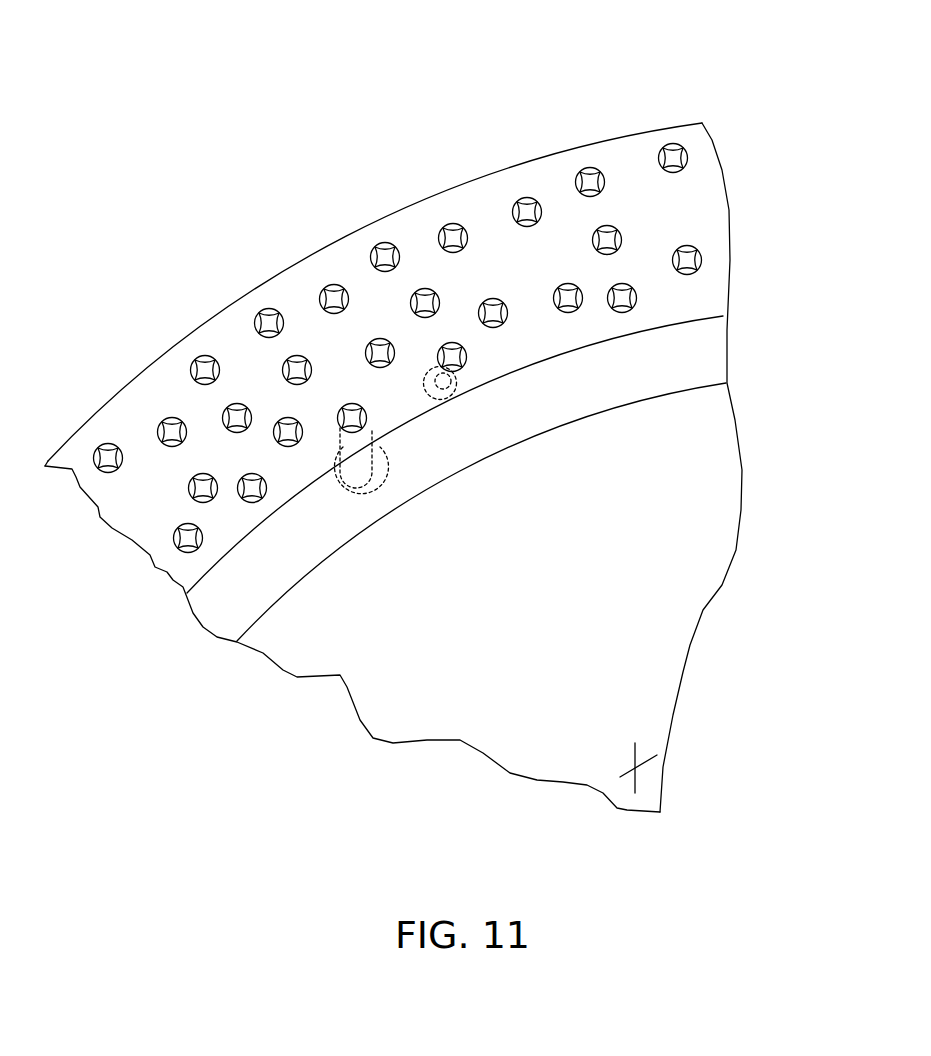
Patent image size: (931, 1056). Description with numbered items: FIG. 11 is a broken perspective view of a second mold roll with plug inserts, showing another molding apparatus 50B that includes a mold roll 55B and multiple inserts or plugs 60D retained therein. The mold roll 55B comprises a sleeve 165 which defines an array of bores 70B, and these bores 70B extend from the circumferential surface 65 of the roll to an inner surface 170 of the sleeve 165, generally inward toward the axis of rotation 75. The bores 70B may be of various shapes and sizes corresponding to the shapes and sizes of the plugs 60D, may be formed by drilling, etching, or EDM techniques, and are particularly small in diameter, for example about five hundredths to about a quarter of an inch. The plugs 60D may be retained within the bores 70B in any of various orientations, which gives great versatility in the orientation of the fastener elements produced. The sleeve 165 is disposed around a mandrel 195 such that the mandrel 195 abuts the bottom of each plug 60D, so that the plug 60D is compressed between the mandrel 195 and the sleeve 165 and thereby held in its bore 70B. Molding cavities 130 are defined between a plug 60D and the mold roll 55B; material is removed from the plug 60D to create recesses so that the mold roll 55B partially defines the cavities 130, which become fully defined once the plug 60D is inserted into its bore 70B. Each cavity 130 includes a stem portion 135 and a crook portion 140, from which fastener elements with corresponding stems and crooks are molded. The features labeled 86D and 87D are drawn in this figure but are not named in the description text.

The molding apparatus 50B is at (190, 274).
The circumferential surface 65 is at (636, 158).
The mold roll 55B is at (703, 300).
The sleeve 165 is at (708, 356).
The inner surface 170 is at (500, 452).
The plugs 60D is at (322, 290).
The bores 70B is at (445, 229).
The stem portion 135 is at (466, 378).
The crook portion 140 is at (448, 392).
The inner slot 86D is at (340, 430).
The outer slot 87D is at (362, 498).
The molding cavities 130 is at (135, 500).
The mandrel 195 is at (645, 668).
The axis of rotation 75 is at (637, 772).